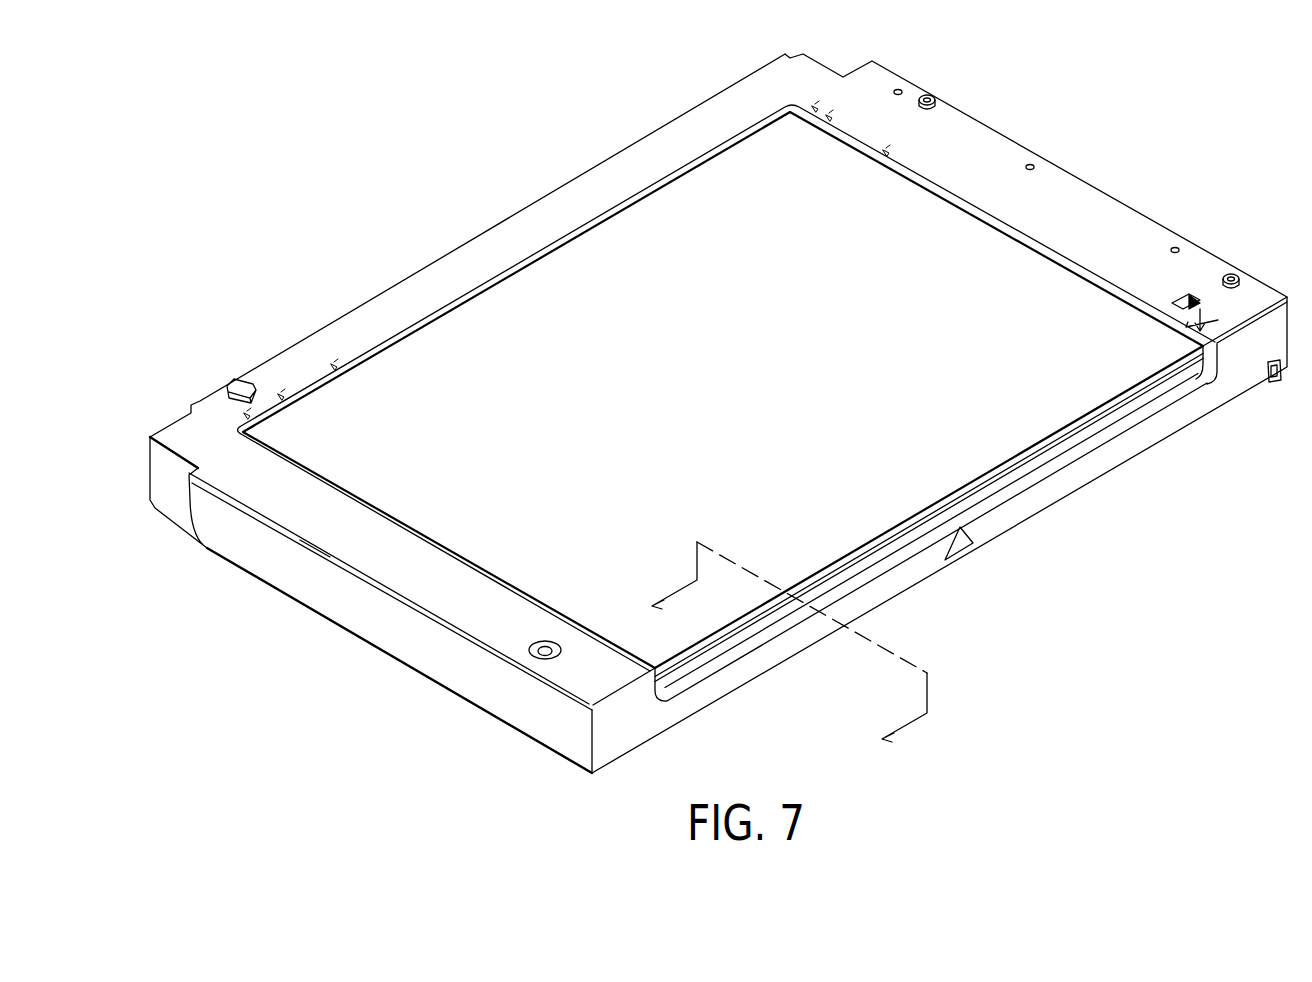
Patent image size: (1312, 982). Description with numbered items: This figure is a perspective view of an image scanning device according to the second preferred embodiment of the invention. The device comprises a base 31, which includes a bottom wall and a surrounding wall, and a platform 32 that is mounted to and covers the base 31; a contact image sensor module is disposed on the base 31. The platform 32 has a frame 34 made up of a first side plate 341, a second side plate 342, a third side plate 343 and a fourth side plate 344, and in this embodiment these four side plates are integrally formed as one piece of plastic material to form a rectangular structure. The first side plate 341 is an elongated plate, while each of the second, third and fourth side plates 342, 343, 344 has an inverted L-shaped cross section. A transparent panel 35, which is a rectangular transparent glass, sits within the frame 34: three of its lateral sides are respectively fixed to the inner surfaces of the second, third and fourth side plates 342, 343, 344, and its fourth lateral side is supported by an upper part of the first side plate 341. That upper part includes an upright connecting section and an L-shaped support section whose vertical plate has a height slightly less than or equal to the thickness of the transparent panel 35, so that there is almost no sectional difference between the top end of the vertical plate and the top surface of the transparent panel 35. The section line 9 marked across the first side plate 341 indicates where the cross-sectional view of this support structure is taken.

The base 31 is at (171, 503).
The platform 32 is at (1154, 203).
The frame 34 is at (508, 710).
The first side plate 341 is at (902, 580).
The second side plate 342 is at (521, 237).
The third side plate 343 is at (401, 618).
The fourth side plate 344 is at (1048, 207).
The transparent panel 35 is at (865, 252).
The section line 9- 9 is at (776, 652).